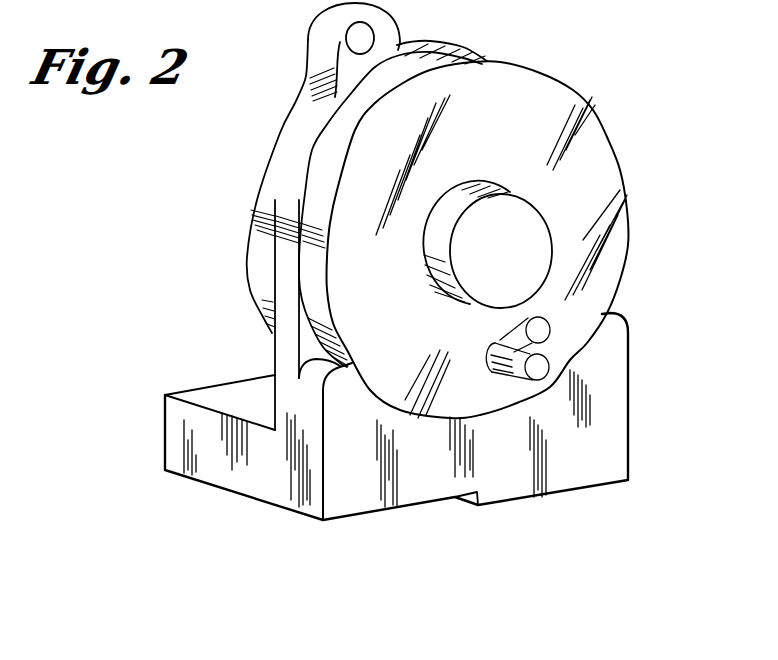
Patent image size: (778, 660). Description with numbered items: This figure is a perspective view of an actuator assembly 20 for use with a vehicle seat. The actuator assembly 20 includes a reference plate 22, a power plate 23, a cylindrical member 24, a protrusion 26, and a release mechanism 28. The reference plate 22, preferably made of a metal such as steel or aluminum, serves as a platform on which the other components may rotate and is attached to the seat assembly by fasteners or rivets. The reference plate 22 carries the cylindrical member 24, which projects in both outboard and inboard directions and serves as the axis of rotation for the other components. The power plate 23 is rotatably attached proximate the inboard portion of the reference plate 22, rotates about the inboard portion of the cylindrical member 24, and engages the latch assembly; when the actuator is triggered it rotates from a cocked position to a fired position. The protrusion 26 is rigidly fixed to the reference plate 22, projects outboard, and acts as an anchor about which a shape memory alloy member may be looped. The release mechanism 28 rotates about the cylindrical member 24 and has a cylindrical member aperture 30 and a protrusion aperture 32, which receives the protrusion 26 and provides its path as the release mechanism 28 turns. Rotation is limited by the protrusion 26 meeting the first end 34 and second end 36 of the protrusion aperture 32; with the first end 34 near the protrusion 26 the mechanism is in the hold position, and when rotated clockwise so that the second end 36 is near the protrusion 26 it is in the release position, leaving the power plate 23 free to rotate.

The actuator assembly 20 is at (176, 189).
The reference plate 22 is at (283, 288).
The power plate 23 is at (293, 137).
The cylindrical member 24 is at (537, 248).
The protrusion 26 is at (513, 380).
The release mechanism 28 is at (548, 108).
The cylindrical member aperture 30 is at (475, 182).
The protrusion aperture 32 is at (556, 354).
The first end of protrusion aperture 34 is at (495, 343).
The second end of protrusion aperture 36 is at (550, 318).